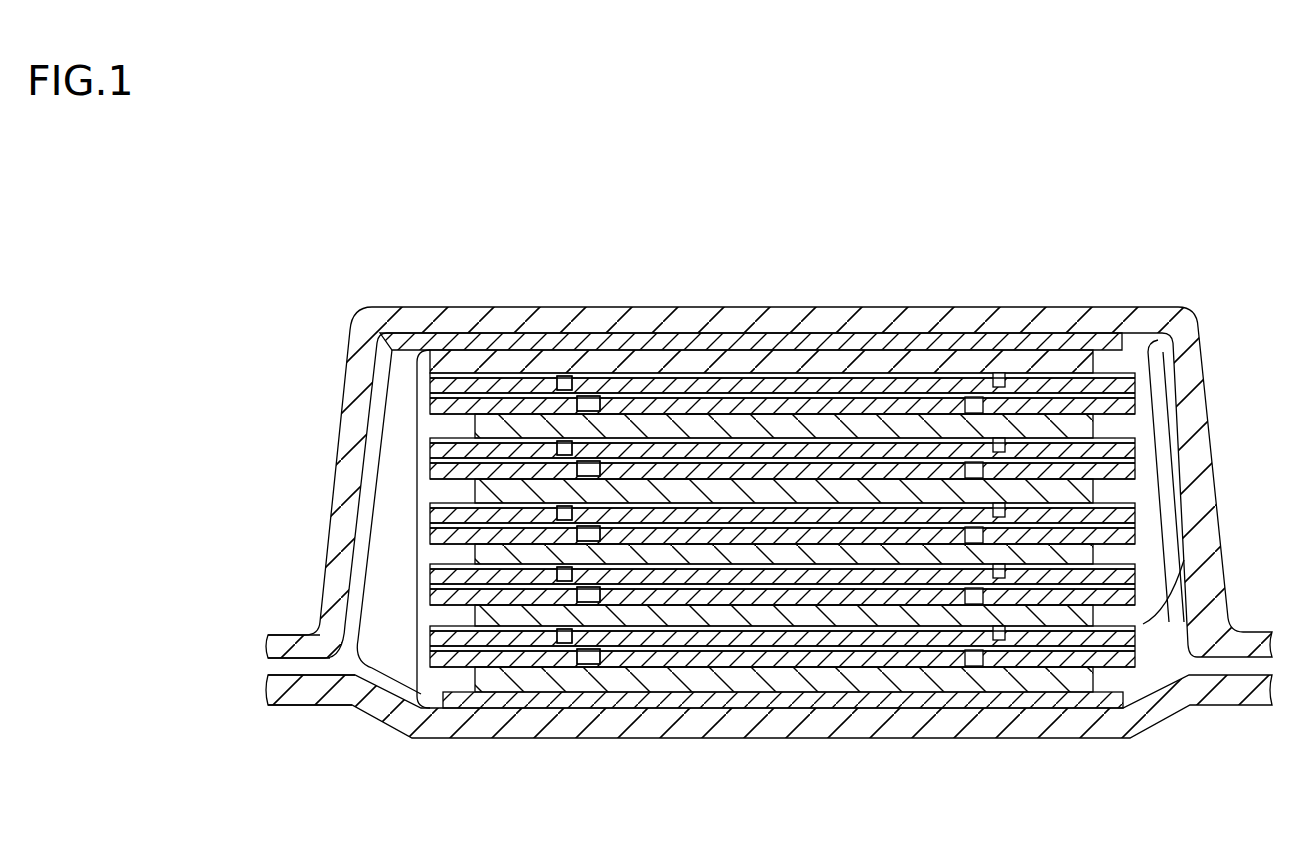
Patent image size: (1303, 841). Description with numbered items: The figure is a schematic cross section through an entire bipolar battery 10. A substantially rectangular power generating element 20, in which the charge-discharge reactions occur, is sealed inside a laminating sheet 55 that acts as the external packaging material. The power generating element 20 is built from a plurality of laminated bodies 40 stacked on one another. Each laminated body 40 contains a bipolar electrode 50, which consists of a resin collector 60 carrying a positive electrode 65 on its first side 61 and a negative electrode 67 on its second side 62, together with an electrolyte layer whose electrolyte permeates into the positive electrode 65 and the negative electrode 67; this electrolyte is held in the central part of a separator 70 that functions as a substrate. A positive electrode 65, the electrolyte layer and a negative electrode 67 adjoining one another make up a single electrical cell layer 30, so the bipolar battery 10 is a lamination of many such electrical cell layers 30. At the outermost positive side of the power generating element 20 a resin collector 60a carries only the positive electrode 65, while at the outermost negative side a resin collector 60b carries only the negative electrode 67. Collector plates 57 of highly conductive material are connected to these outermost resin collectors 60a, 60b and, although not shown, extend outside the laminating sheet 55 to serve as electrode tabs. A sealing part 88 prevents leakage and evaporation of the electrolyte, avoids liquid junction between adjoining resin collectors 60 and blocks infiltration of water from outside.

The bipolar battery 10 is at (410, 199).
The power generating element 20 is at (416, 542).
The electrical cell layer 30 is at (823, 256).
The laminated body 40 is at (648, 256).
The bipolar electrode 50 is at (508, 256).
The laminating sheet 55 is at (300, 636).
The collector plate 57 is at (1107, 343).
The resin collector 60 is at (620, 475).
The resin collector 60a is at (871, 682).
The resin collector 60b is at (977, 366).
The first side 61 is at (503, 470).
The second side 62 is at (493, 520).
The positive electrode 65 is at (660, 470).
The negative electrode 67 is at (570, 485).
The separator 70 is at (697, 430).
The sealing part 88 is at (1222, 537).